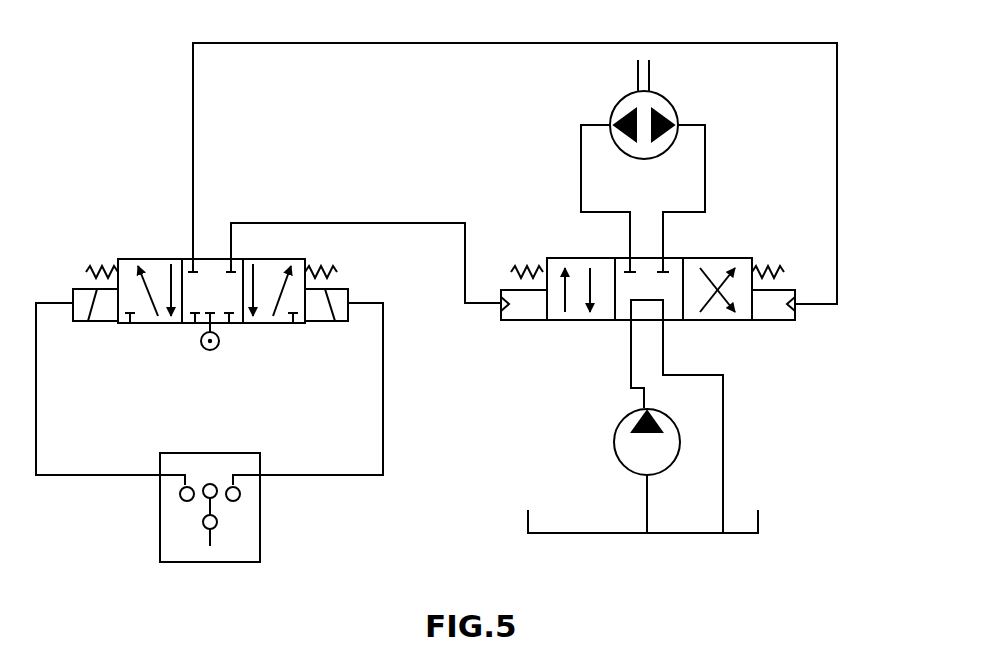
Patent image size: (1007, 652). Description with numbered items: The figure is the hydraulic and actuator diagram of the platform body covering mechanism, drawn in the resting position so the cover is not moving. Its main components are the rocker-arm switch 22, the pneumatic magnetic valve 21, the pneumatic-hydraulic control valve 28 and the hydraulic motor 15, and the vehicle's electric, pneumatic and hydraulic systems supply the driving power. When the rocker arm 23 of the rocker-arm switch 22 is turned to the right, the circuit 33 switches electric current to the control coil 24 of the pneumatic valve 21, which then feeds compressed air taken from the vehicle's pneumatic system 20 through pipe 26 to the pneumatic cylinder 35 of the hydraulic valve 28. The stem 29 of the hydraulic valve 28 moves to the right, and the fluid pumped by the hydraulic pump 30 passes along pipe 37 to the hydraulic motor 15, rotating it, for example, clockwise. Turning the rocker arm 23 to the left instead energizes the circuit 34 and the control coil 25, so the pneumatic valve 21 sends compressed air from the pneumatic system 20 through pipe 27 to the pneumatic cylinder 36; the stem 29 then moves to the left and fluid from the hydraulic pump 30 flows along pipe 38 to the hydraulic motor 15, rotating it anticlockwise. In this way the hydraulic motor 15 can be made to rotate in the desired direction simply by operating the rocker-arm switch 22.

The hydraulic motor 15 is at (690, 108).
The pneumatic system 20 is at (215, 349).
The pneumatic magnetic valve 21 is at (154, 244).
The rocker-arm switch 22 is at (140, 556).
The rocker arm 23 is at (213, 540).
The control coil 24 is at (342, 290).
The control coil 25 is at (83, 292).
The pipe 26 is at (355, 222).
The pipe 27 is at (297, 43).
The pneumatic-hydraulic control valve 28 is at (692, 376).
The stem 29 is at (692, 260).
The hydraulic pump 30 is at (606, 440).
The circuit 33 is at (383, 401).
The circuit 34 is at (37, 398).
The pneumatic cylinder 35 is at (521, 310).
The pneumatic cylinder 36 is at (793, 318).
The pipe 37 is at (581, 170).
The pipe 38 is at (705, 176).